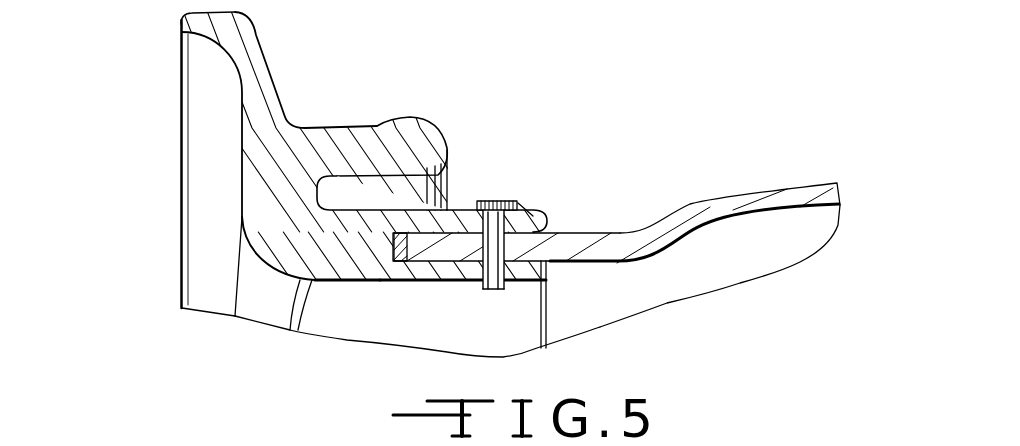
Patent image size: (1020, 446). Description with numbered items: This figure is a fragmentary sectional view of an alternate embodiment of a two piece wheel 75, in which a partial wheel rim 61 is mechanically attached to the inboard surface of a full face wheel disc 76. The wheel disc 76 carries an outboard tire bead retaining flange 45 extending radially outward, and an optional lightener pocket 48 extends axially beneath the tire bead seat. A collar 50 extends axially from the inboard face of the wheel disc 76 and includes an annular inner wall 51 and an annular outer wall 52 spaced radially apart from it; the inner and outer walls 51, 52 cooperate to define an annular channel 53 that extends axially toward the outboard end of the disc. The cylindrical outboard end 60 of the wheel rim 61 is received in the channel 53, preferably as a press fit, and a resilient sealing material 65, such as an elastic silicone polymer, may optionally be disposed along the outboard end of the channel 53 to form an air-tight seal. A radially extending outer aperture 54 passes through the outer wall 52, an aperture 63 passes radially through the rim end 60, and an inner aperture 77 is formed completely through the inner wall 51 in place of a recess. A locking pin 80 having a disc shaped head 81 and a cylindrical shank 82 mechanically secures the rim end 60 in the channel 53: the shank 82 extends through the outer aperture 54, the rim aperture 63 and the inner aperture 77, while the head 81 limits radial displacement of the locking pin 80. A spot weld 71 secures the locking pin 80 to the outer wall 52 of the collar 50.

The outboard tire bead retaining flange 45 is at (258, 33).
The lightener pocket 48 is at (344, 192).
The outer aperture 54 is at (466, 220).
The disc shaped head 81 is at (485, 210).
The spot weld 71 is at (522, 206).
The outer wall 52 is at (535, 217).
The aperture 63 is at (547, 235).
The cylindrical outboard end 60 is at (610, 242).
The wheel 75 is at (617, 93).
The partial wheel rim 61 is at (770, 260).
The full face wheel disc 76 is at (193, 222).
The resilient sealing material 65 is at (391, 281).
The collar 50 is at (417, 290).
The locking pin 80 is at (461, 282).
The cylindrical shank 82 is at (491, 285).
The inner aperture 77 is at (546, 314).
The inner wall 51 is at (550, 263).
The annular channel 53 is at (618, 269).